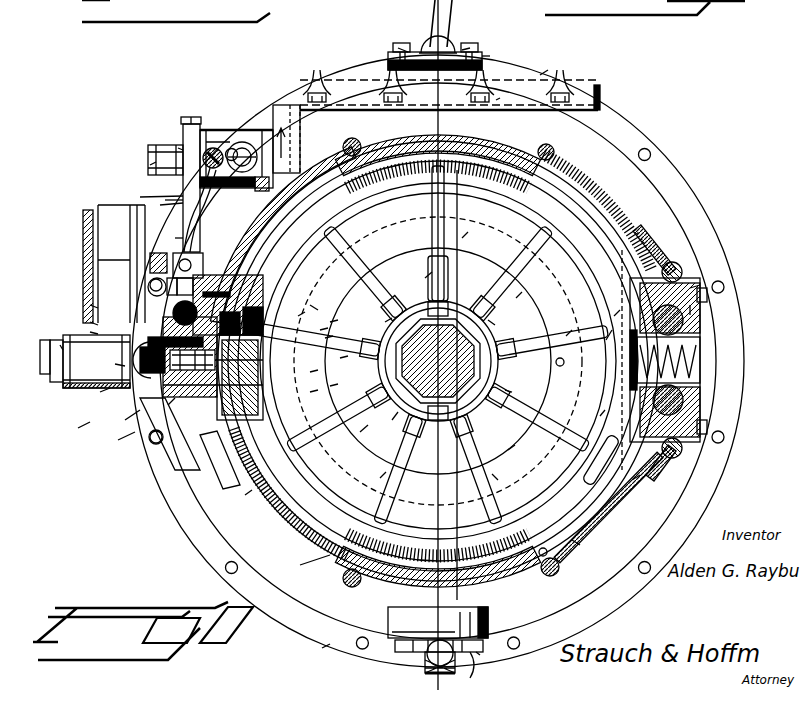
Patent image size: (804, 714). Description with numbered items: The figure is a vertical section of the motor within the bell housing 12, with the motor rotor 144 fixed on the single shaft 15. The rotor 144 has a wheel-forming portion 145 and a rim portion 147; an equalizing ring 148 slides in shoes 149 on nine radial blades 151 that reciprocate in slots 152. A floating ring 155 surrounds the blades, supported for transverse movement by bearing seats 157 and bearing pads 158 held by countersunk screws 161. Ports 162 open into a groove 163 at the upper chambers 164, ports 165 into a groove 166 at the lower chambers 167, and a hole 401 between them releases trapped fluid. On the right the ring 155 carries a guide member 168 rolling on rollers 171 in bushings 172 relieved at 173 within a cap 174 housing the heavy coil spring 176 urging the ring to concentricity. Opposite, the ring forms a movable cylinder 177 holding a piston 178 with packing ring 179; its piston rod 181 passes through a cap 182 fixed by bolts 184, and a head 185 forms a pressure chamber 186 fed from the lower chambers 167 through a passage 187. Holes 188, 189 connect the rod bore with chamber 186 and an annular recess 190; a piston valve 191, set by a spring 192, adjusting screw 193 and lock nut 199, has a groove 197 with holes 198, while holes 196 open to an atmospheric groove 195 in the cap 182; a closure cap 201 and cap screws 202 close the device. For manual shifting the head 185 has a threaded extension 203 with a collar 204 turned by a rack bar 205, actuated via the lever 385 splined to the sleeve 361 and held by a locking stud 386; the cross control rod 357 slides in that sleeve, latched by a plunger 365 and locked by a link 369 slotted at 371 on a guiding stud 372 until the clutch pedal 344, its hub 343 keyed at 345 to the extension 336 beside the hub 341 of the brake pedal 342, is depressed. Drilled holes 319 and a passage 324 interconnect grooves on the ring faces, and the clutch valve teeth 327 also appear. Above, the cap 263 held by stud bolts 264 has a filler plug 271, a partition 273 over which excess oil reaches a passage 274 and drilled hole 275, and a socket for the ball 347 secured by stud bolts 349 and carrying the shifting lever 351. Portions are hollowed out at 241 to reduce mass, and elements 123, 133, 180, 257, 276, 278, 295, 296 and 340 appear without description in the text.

The bell housing 12 is at (700, 212).
The shaft 15 is at (650, 212).
The bracket 123 is at (580, 545).
The spoke boss 133 is at (522, 292).
The motor rotor 144 is at (470, 270).
The annular wheel-forming portion 145 is at (385, 322).
The rim or chamber-forming portion 147 is at (425, 268).
The equalizing ring 148 is at (508, 378).
The special shoes 149 is at (392, 420).
The radial blades 151 is at (375, 370).
The slots 152 is at (425, 280).
The floating ring 155 is at (580, 220).
The self-aligned bearing seats 157 is at (468, 232).
The bearing pads 158 is at (365, 145).
The countersunk screws 161 is at (330, 322).
The ports 162 is at (500, 228).
The slot or groove 163 is at (455, 250).
The chambers 164 is at (365, 230).
The ports 165 is at (380, 478).
The slot or groove 166 is at (515, 445).
The chambers 167 is at (360, 432).
The guide member 168 is at (572, 330).
The rollers 171 is at (690, 310).
The anti-friction bushings 172 is at (692, 320).
The relieved portion 173 is at (160, 448).
The cap 174 is at (700, 285).
The heavy coil spring 176 is at (700, 390).
The movable cylinder 177 is at (210, 462).
The piston 178 is at (310, 372).
The packing ring 179 is at (298, 316).
The lug 180 is at (620, 310).
The piston rod 181 is at (310, 305).
The cap 182 is at (200, 240).
The bolts 184 is at (310, 392).
The head 185 is at (135, 398).
The pressure chamber 186 is at (168, 405).
The passage 187 is at (640, 475).
The hole 188 is at (620, 335).
The hole 189 is at (605, 410).
The annular recess 190 is at (320, 330).
The controlling piston valve 191 is at (165, 425).
The spring 192 is at (115, 352).
The adjusting screw 193 is at (100, 392).
The circular groove 195 is at (125, 420).
The radial holes 196 is at (330, 386).
The circular groove 197 is at (325, 338).
The radial holes 198 is at (340, 358).
The lock nut 199 is at (90, 322).
The closure cap 201 is at (90, 332).
The cap screws 202 is at (118, 440).
The spirally threaded extension 203 is at (90, 305).
The collar 204 is at (148, 285).
The circular rack bar 205 is at (175, 238).
The hollowed-out portion 241 is at (245, 495).
The lower clamp band 257 is at (440, 585).
The cap 263 is at (620, 408).
The stud bolts 264 is at (410, 100).
The filler plug 271 is at (392, 58).
The partition 273 is at (500, 98).
The passage 274 is at (470, 140).
The drilled hole 275 is at (740, 440).
The bracket 276 is at (322, 648).
The bracket 278 is at (480, 655).
The lower housing 295 is at (430, 665).
The bracket 296 is at (283, 105).
The drilled holes 319 is at (445, 205).
The passage 324 is at (301, 566).
The teeth 327 is at (606, 530).
The cylindrical extension 336 is at (115, 364).
The cap plate 340 is at (490, 56).
The hub 341 is at (95, 412).
The brake pedal 342 is at (183, 190).
The hub 343 is at (78, 428).
The clutch pedal 344 is at (83, 248).
The key 345 is at (60, 345).
The spherical ball 347 is at (398, 48).
The stud bolts 349 is at (470, 48).
The shifting lever 351 is at (455, 22).
The cross control rod 357 is at (150, 165).
The cylindrical sleeve 361 is at (244, 142).
The plunger 365 is at (148, 155).
The link 369 is at (160, 205).
The slot 371 is at (220, 195).
The guiding stud 372 is at (178, 148).
The lever 385 is at (140, 197).
The locking stud 386 is at (191, 117).
The hole 401 is at (512, 392).